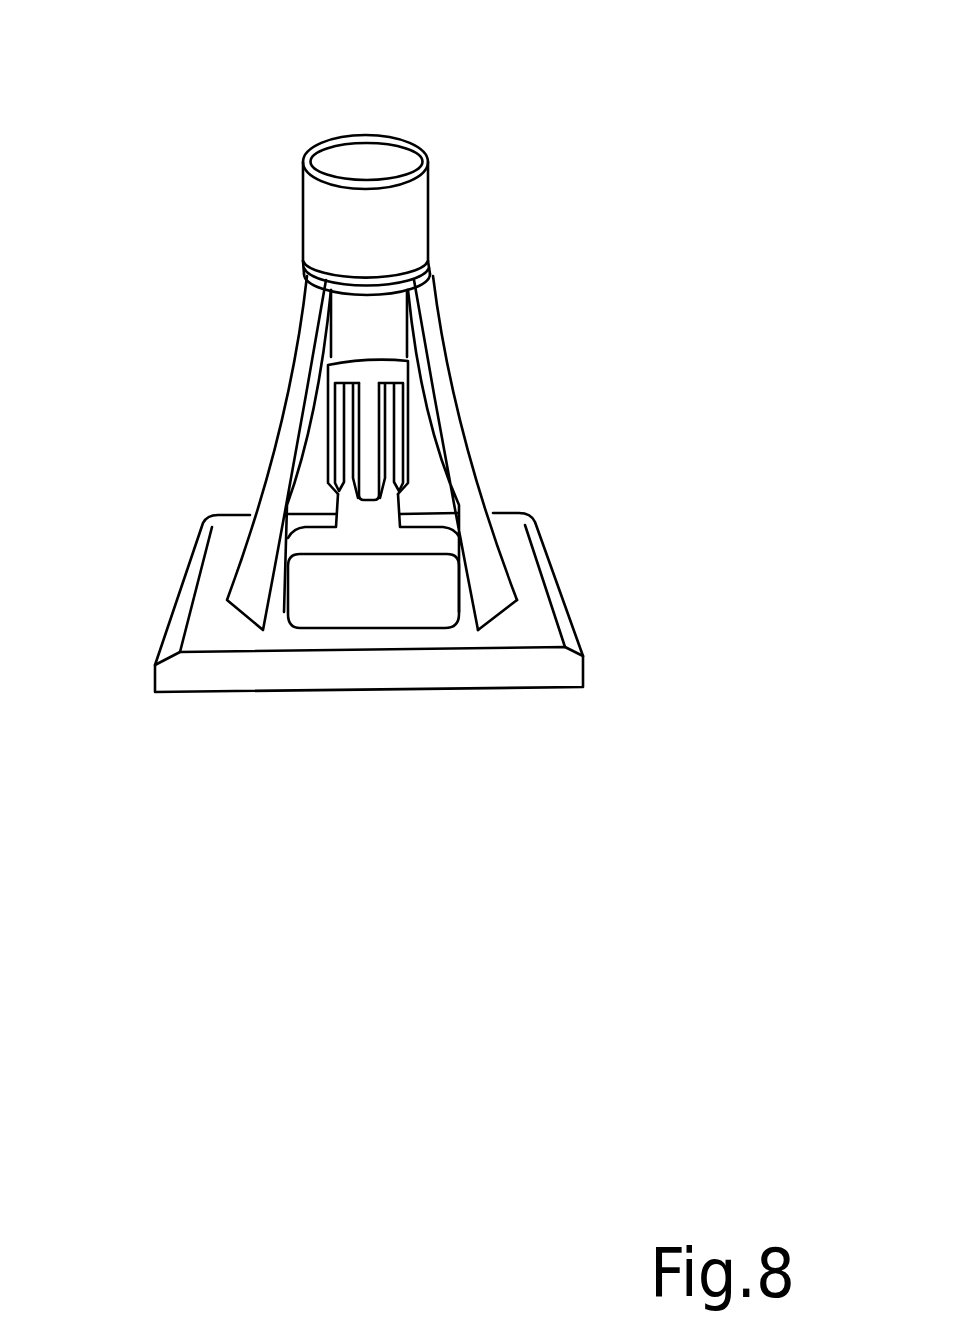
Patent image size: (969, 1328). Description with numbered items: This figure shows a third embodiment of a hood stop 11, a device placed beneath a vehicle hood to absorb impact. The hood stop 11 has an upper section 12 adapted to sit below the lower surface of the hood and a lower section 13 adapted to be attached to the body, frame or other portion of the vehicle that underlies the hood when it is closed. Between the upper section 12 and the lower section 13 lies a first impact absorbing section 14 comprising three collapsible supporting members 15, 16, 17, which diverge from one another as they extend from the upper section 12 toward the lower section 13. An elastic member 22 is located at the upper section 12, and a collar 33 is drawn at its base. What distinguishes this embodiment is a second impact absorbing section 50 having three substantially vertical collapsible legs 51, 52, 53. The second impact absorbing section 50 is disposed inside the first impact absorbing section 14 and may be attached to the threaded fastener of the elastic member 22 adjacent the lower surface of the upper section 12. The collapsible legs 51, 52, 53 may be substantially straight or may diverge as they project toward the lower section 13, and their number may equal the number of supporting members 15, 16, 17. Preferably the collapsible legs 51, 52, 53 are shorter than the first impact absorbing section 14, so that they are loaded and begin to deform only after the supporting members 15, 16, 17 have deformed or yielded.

The hood stop 11 is at (265, 124).
The elastic member 22 is at (418, 194).
The collar 33 is at (350, 284).
The upper section 12 is at (430, 332).
The impact absorbing section 14 is at (497, 491).
The collapsible supporting member 15 is at (490, 577).
The collapsible supporting member 16 is at (248, 596).
The lower section 13 is at (535, 633).
The collapsible supporting member 17 is at (358, 520).
The second impact absorbing section 50 is at (412, 418).
The collapsible leg 51 is at (410, 458).
The collapsible leg 52 is at (370, 428).
The collapsible leg 53 is at (332, 458).